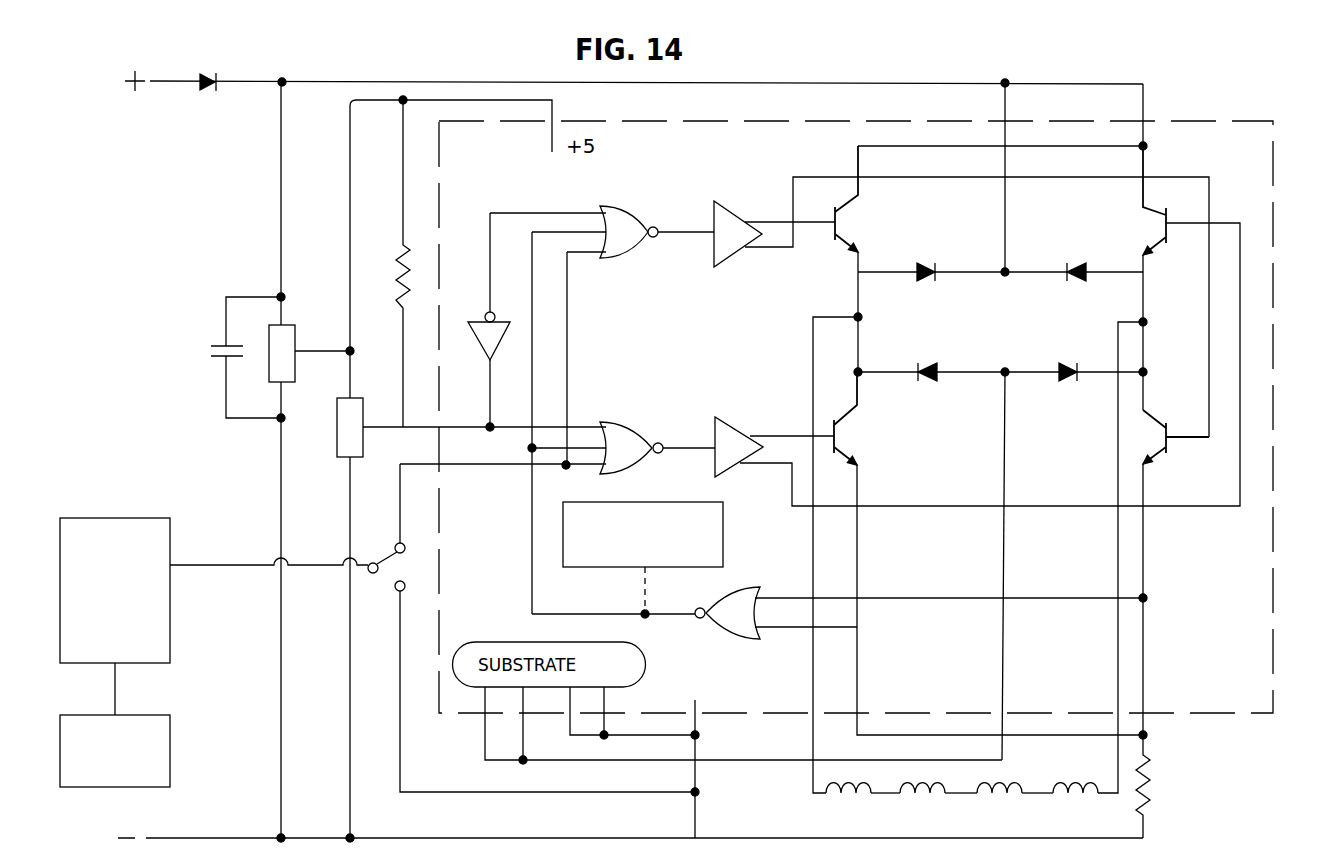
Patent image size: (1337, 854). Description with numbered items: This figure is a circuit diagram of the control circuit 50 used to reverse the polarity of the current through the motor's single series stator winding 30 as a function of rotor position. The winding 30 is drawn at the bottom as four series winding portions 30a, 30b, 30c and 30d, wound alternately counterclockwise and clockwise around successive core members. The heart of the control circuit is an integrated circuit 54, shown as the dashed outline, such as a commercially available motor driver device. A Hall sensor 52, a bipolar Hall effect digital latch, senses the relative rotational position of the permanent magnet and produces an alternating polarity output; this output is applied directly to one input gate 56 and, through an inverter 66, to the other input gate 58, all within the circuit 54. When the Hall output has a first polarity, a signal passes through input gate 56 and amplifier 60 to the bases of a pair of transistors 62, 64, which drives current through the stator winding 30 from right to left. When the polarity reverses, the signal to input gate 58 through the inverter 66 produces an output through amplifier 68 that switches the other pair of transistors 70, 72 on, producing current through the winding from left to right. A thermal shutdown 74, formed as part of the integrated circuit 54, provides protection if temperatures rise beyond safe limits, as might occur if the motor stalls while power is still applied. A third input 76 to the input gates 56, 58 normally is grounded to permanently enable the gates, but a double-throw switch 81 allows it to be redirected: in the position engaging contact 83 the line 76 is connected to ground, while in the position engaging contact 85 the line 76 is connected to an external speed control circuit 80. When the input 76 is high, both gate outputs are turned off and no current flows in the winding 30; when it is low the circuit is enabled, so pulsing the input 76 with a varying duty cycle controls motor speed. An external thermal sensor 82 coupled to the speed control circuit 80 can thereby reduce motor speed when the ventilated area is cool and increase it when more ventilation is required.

The winding 30 is at (944, 796).
The winding portion 30a is at (835, 800).
The winding portion 30b is at (910, 800).
The winding portion 30c is at (985, 800).
The winding portion 30d is at (1080, 770).
The control circuit 50 is at (1222, 786).
The Hall sensor 52 is at (337, 455).
The integrated circuit 54 is at (1265, 688).
The input gate 56 is at (640, 422).
The input gate 58 is at (612, 258).
The amplifier 60 is at (738, 417).
The transistor 62 is at (840, 438).
The transistor 64 is at (1162, 228).
The inverter 66 is at (505, 348).
The amplifier 68 is at (732, 262).
The transistor 70 is at (840, 228).
The transistor 72 is at (1162, 436).
The thermal shutdown 74 is at (725, 541).
The third input 76 is at (470, 466).
The external control circuit 80 is at (170, 610).
The double-throw switch 81 is at (407, 550).
The external thermal sensor 82 is at (170, 728).
The contact 83 is at (407, 585).
The contact 85 is at (373, 562).